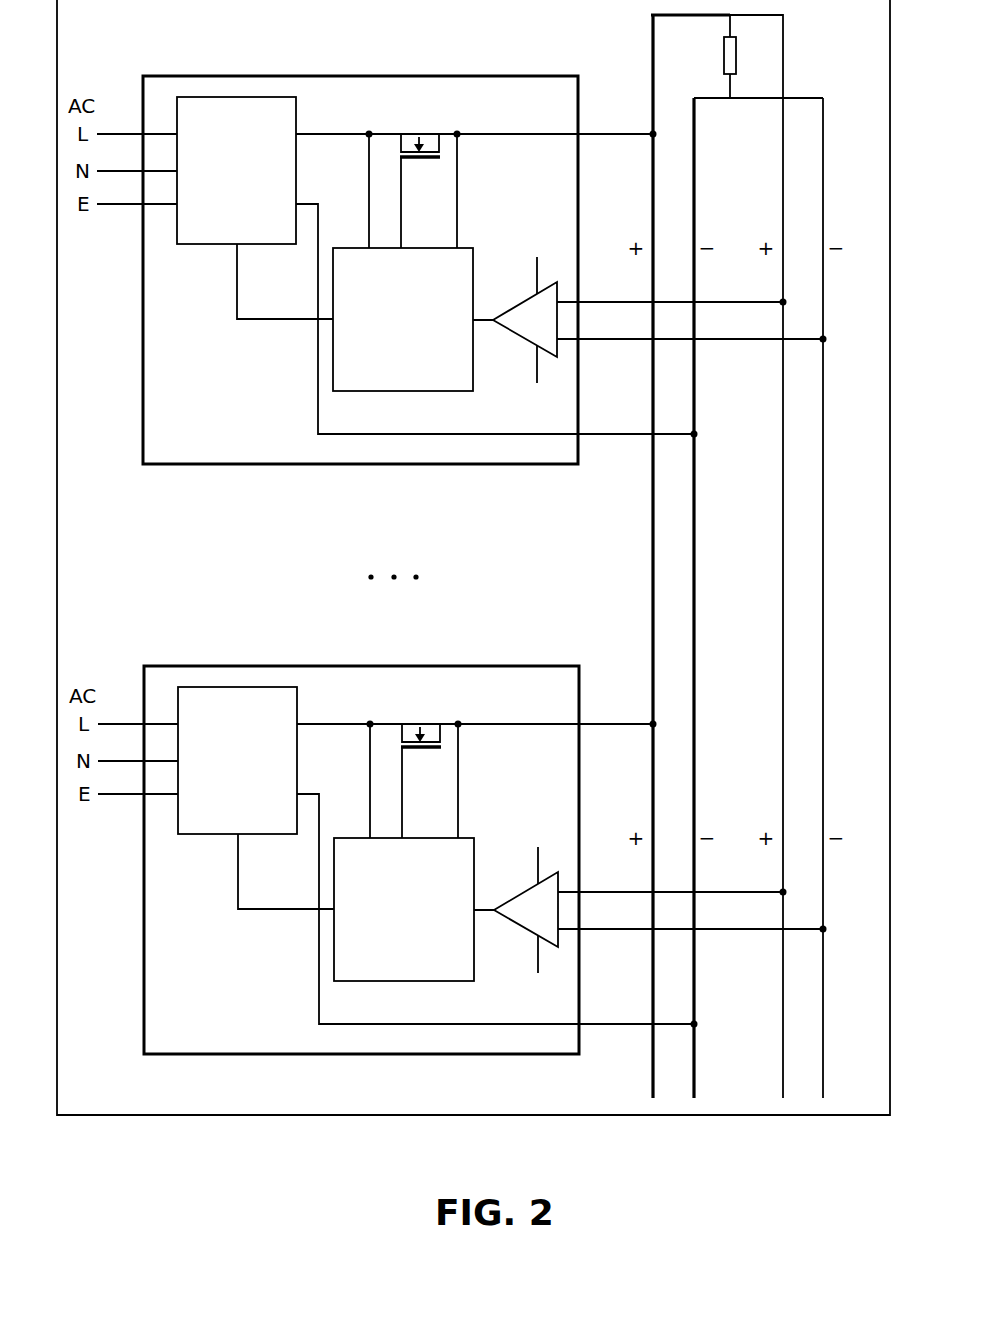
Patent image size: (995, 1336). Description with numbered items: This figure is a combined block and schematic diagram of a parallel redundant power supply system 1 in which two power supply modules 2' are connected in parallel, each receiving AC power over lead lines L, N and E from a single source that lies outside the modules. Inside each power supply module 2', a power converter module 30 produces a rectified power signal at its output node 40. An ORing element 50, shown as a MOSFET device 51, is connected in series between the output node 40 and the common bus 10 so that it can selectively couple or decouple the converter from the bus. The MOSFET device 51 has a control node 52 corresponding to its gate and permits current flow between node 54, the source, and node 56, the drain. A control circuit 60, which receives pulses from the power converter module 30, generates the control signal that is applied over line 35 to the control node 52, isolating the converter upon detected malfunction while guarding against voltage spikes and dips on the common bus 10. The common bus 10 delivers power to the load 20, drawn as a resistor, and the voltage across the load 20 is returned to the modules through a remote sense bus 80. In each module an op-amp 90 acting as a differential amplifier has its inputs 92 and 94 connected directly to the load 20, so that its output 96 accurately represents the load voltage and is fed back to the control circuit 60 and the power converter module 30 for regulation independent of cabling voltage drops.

The power supply system 1 is at (752, 1115).
The power supply module 2' is at (341, 565).
The common bus 10 is at (652, 50).
The load 20 is at (724, 60).
The power converter module 30 is at (216, 246).
The line 35 is at (403, 228).
The output node 40 is at (334, 137).
The ORing element 50 is at (425, 737).
The MOSFET device 51 is at (425, 146).
The control node 52 is at (429, 160).
The node 54 is at (378, 132).
The node 56 is at (449, 132).
The control circuit 60 is at (475, 253).
The remote sense bus 80 is at (784, 58).
The op-amp 90 is at (527, 352).
The input 92 is at (570, 300).
The input 94 is at (570, 342).
The output 96 is at (483, 313).